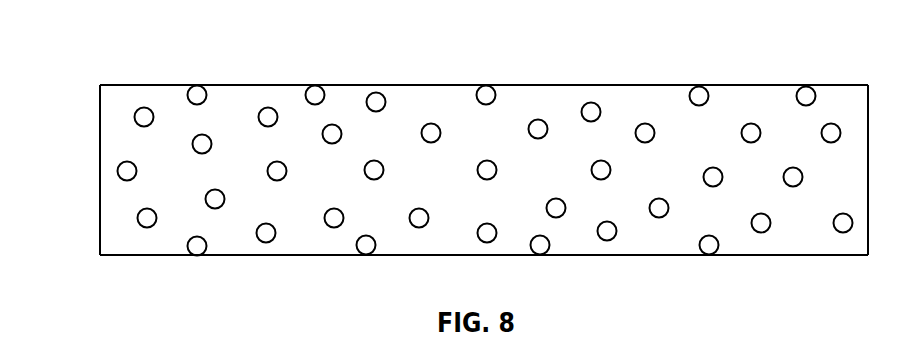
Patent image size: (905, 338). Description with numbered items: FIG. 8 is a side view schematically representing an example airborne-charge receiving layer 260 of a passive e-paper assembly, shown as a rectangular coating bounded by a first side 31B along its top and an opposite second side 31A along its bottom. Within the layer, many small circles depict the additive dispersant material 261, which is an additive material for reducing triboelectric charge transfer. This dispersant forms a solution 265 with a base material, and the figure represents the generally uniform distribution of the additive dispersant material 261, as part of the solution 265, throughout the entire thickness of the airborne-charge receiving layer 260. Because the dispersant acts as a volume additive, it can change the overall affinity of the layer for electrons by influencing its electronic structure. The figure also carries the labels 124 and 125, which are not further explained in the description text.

The airborne-charge receiving layer 260 is at (446, 172).
The first layer 124 is at (265, 85).
The second layer region 125 is at (569, 189).
The additive dispersant material 261 is at (541, 119).
The solution 265 is at (443, 100).
The second side 31A is at (687, 256).
The first side 31B is at (750, 85).